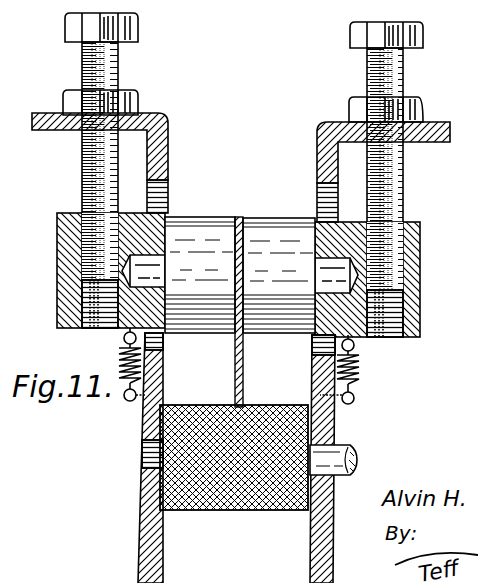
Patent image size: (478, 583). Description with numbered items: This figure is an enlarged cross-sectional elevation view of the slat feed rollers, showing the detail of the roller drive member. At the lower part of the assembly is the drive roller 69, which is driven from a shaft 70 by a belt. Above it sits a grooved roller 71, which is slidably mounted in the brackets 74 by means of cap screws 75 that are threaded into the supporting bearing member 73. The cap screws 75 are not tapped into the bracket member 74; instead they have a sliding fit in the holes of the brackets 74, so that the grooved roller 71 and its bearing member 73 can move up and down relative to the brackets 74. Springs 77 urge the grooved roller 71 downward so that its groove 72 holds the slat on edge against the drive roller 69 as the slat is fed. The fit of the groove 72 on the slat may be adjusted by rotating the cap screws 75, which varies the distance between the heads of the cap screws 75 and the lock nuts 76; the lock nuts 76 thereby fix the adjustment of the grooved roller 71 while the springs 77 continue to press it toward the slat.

The drive roller 69 is at (181, 510).
The shaft 70 is at (357, 447).
The grooved roller 71 is at (229, 197).
The groove 72 is at (241, 218).
The supporting bearing member 73 is at (57, 220).
The bracket 74 is at (44, 113).
The cap screw 75 is at (138, 30).
The lock nut 76 is at (75, 90).
The spring 77 is at (118, 350).